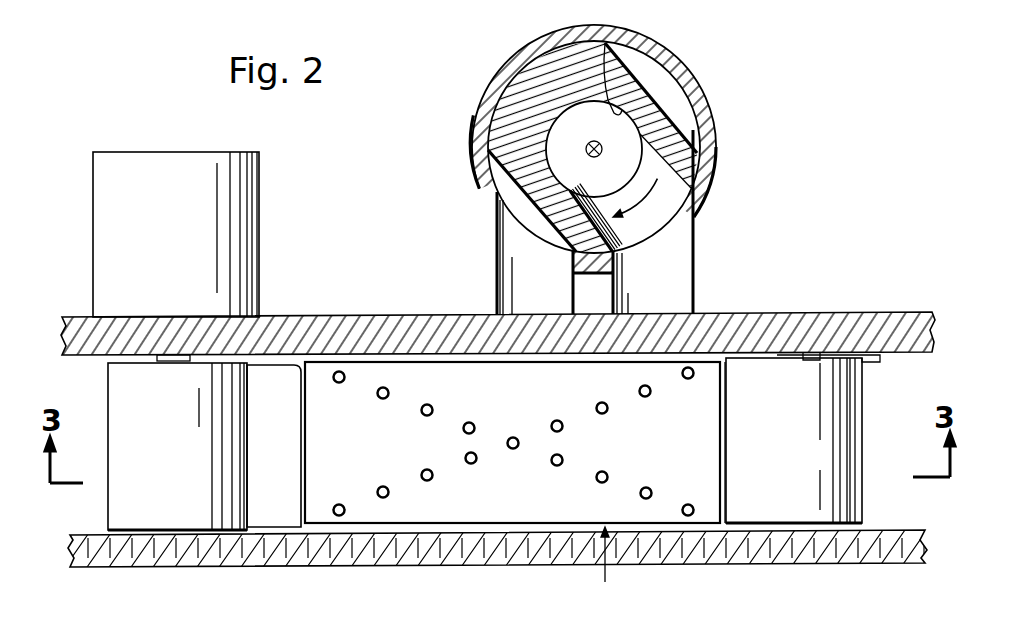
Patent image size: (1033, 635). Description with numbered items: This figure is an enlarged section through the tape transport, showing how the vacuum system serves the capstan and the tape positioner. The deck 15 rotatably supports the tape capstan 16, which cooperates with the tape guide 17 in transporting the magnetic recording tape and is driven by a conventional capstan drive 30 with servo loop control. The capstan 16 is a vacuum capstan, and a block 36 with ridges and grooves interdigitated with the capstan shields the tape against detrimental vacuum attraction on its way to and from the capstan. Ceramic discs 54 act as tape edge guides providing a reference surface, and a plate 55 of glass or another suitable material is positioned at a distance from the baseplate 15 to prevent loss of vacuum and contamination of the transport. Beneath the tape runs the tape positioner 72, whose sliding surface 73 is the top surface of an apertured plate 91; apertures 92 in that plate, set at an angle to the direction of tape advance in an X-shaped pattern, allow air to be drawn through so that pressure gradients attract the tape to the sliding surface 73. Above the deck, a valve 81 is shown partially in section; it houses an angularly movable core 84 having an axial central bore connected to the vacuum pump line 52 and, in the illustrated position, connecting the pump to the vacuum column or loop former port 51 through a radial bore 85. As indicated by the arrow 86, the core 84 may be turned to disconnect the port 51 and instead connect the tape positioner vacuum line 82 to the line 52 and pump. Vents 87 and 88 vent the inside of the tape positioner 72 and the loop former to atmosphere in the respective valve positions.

The deck 15 is at (370, 313).
The tape capstan 16 is at (108, 509).
The tape guide 17 is at (848, 508).
The capstan drive 30 is at (186, 243).
The block 36 is at (282, 513).
The vacuum column or loop former port 51 is at (692, 296).
The vacuum pump line 52 is at (657, 46).
The ceramic discs 54 is at (870, 362).
The plate 55 is at (437, 547).
The tape positioner 72 is at (615, 569).
The sliding surface 73 is at (710, 466).
The valve 81 is at (466, 124).
The vacuum line 82 is at (507, 277).
The core 84 is at (675, 143).
The radial bore 85 is at (672, 188).
The arrow 86 is at (648, 213).
The vent 87 is at (507, 173).
The vent 88 is at (662, 91).
The apertured plate 91 is at (545, 527).
The apertures 92 is at (511, 438).